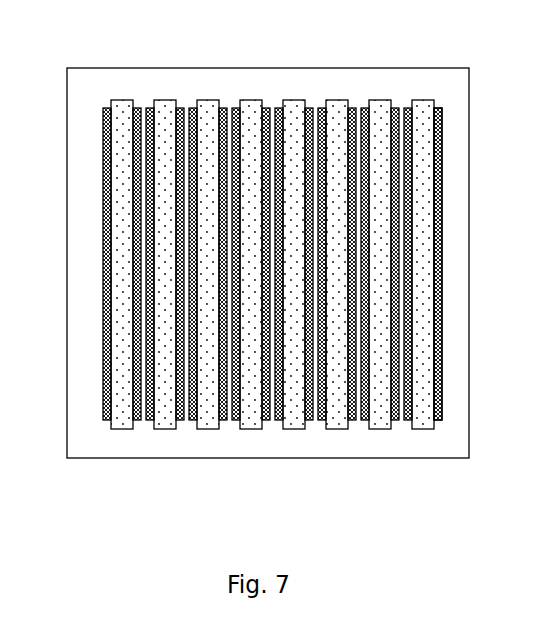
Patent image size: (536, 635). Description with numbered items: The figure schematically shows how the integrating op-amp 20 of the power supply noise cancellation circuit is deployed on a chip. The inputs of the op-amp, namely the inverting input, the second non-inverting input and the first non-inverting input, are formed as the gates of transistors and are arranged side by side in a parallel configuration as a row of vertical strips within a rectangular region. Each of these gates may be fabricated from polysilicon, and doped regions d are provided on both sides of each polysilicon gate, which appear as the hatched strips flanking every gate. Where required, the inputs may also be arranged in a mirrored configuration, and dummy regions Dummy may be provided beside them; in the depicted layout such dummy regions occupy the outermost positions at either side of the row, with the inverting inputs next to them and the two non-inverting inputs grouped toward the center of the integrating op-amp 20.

The integrating op-amp 20 is at (93, 50).
The dummy region Dummy is at (265, 310).
The doped region d is at (442, 220).